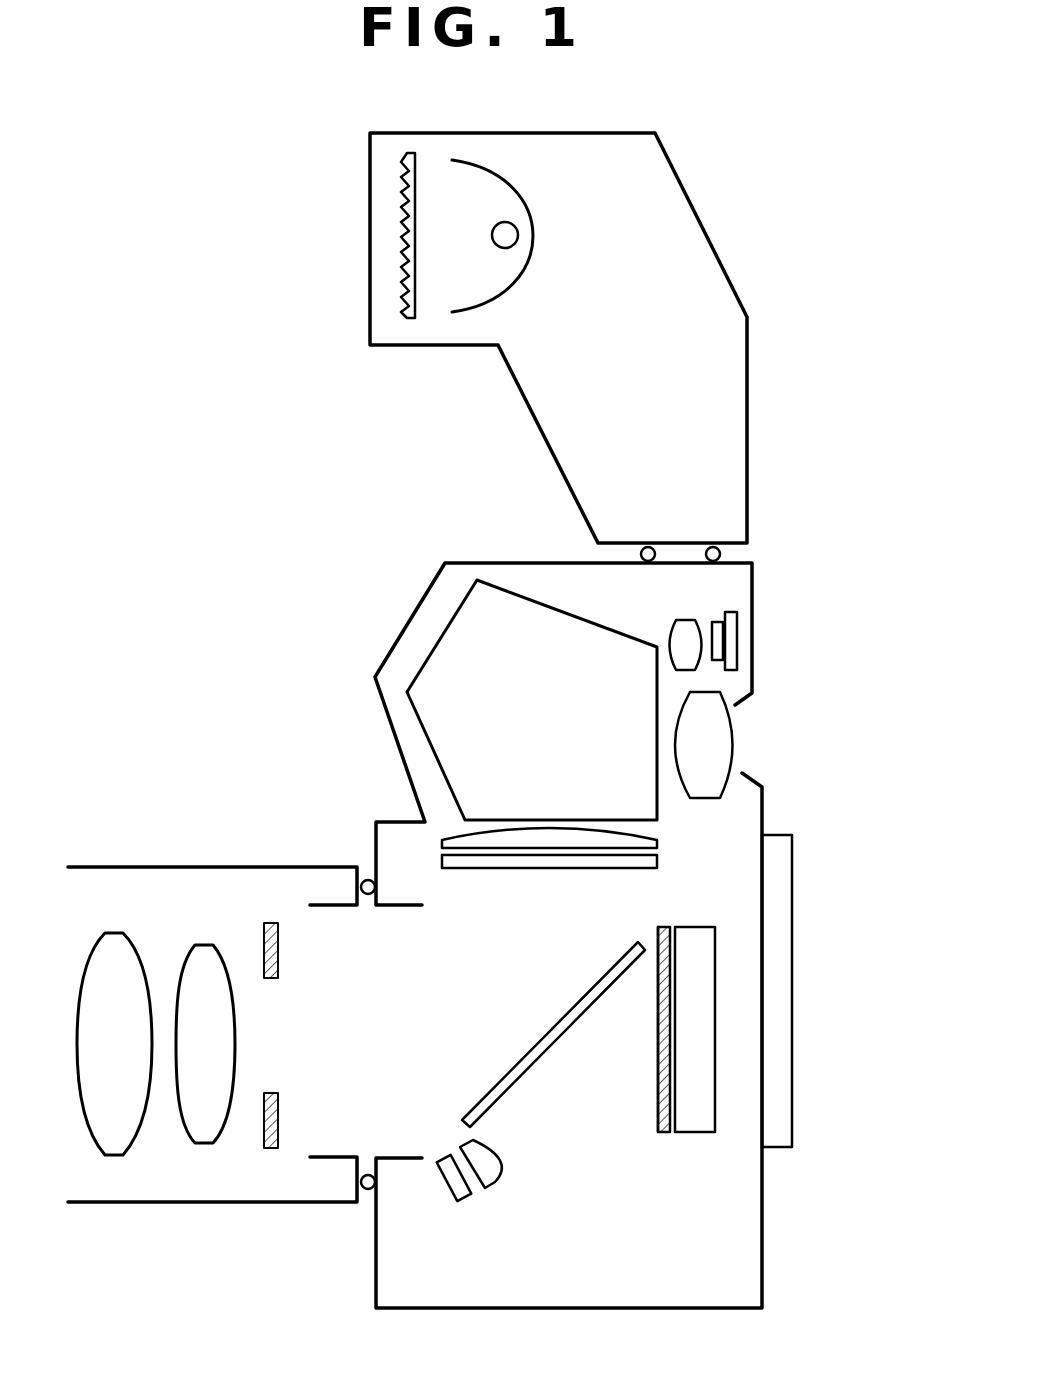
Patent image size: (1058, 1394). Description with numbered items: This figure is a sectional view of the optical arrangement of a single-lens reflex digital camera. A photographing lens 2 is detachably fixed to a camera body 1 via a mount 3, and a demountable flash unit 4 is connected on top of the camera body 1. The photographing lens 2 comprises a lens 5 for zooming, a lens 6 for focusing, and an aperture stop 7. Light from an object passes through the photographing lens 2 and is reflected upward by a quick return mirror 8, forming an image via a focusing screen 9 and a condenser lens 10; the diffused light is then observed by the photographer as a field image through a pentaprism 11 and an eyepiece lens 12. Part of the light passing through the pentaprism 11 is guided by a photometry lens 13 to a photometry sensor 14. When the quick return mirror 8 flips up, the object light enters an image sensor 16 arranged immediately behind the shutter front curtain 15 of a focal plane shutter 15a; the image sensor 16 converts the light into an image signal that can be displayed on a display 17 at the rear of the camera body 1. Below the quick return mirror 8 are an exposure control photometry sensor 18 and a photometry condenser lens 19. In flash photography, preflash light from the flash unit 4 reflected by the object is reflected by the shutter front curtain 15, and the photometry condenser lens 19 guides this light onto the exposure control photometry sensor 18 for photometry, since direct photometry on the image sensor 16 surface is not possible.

The camera body 1 is at (762, 1222).
The photographing lens 2 is at (185, 1215).
The mount 3 is at (320, 867).
The flash unit 4 is at (685, 187).
The lens for zooming 5 is at (115, 932).
The lens for focusing 6 is at (210, 945).
The aperture stop 7 is at (273, 922).
The quick return mirror 8 is at (558, 1018).
The focusing screen 9 is at (652, 860).
The condenser lens 10 is at (643, 840).
The pentaprism 11 is at (433, 643).
The eyepiece lens 12 is at (713, 737).
The photometry lens 13 is at (683, 628).
The photometry sensor 14 is at (730, 640).
The shutter front curtain 15 is at (658, 1070).
The focal plane shutter 15a is at (658, 927).
The image sensor 16 is at (695, 1133).
The display 17 is at (792, 1017).
The exposure control photometry sensor 18 is at (467, 1202).
The photometry condenser lens 19 is at (497, 1187).